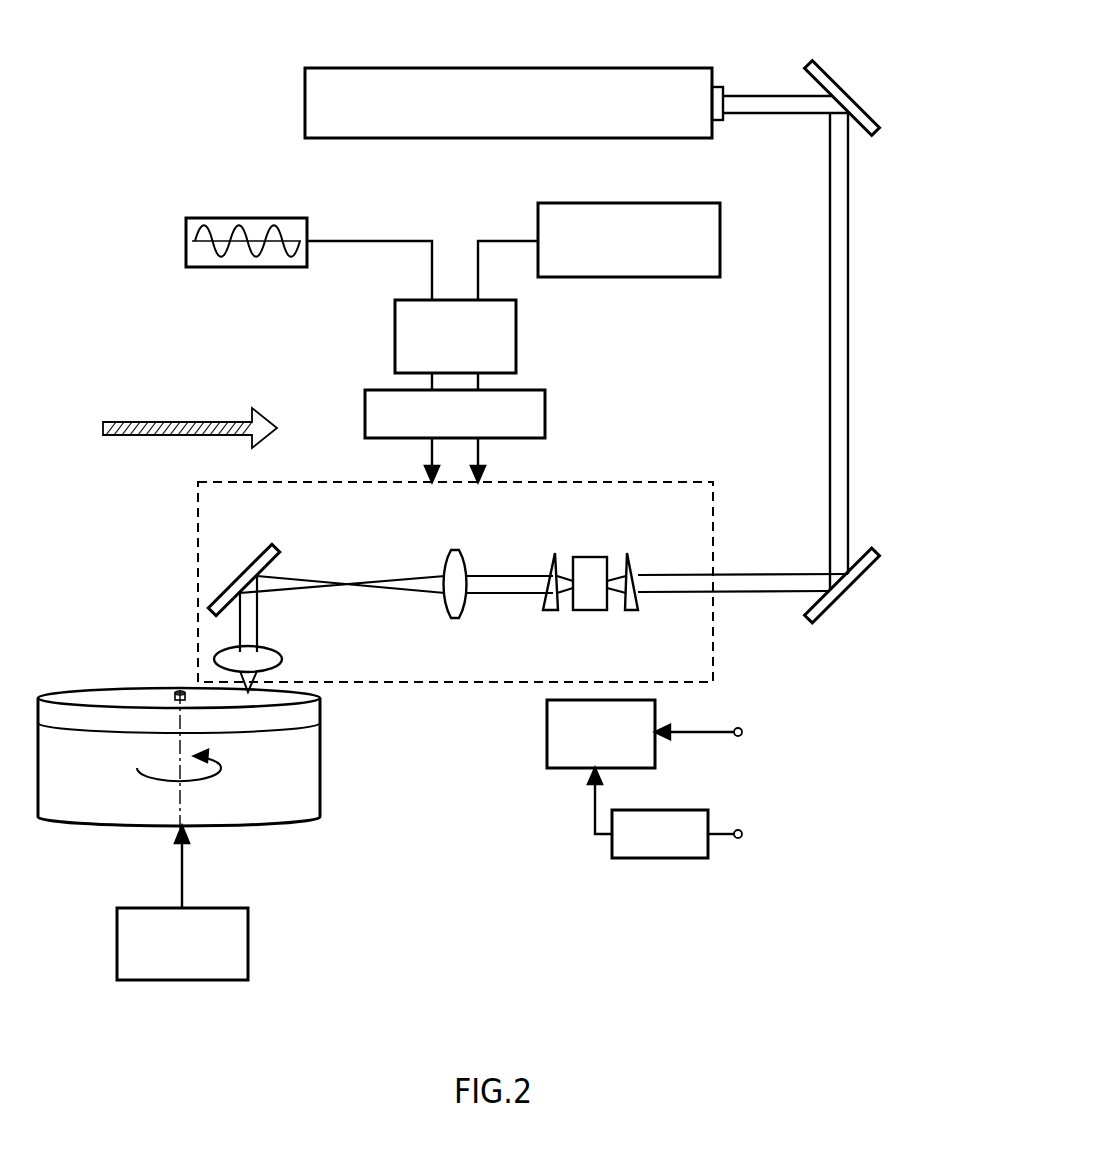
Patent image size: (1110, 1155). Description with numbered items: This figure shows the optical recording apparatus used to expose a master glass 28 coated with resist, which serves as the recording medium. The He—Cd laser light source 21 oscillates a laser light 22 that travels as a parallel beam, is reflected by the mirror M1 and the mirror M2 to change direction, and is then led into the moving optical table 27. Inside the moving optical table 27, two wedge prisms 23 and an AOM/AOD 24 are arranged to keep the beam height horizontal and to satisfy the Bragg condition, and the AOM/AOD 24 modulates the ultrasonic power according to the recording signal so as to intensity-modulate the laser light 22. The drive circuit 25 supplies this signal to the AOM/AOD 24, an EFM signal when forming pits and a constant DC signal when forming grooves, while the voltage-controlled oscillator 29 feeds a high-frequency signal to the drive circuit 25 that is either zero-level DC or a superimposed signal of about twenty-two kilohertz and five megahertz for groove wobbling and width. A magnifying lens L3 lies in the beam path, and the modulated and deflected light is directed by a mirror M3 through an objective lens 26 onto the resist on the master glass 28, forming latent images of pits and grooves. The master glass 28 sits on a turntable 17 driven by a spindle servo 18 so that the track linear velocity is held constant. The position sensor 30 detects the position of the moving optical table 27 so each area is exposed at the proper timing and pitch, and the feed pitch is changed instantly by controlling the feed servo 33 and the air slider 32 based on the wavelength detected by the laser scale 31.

The He—Cd laser light source 21 is at (646, 68).
The laser light 22 is at (761, 95).
The mirror M1 is at (818, 66).
The mirror M2 is at (845, 597).
The mirror M3 is at (240, 570).
The position sensor 30 is at (703, 203).
The laser scale 31 is at (205, 218).
The feed servo 33 is at (395, 318).
The air slider 32 is at (365, 401).
The moving optical table 27 is at (198, 522).
The magnifying lens L3 is at (454, 550).
The AOM/AOD 24 is at (590, 557).
The wedge prisms 23 is at (551, 612).
The objective lens 26 is at (282, 661).
The turntable 17 is at (307, 777).
The master glass 28 is at (310, 720).
The spindle servo 18 is at (250, 928).
The drive circuit 25 is at (567, 770).
The voltage-controlled oscillator 29 is at (633, 860).